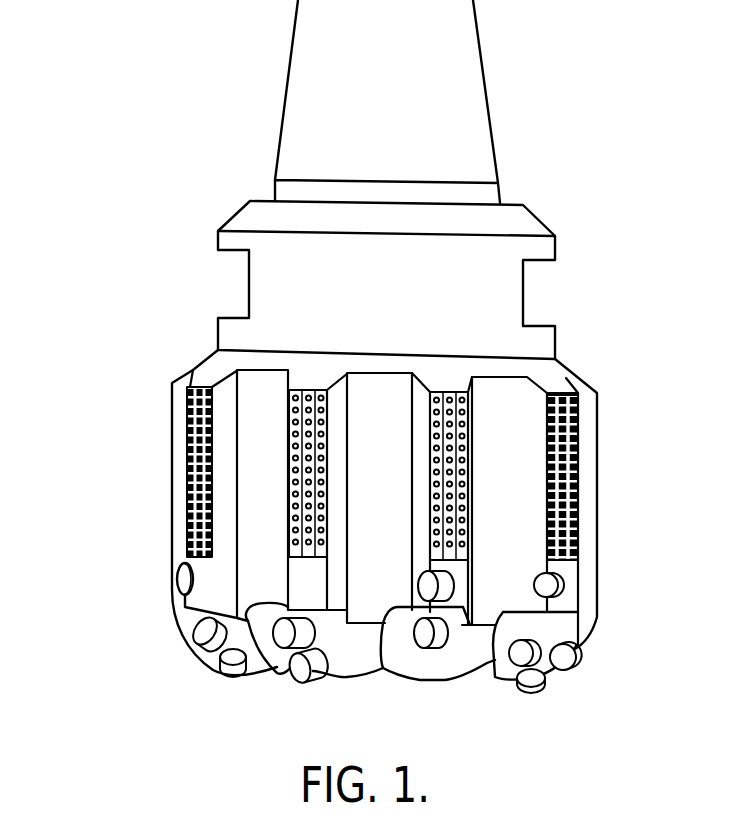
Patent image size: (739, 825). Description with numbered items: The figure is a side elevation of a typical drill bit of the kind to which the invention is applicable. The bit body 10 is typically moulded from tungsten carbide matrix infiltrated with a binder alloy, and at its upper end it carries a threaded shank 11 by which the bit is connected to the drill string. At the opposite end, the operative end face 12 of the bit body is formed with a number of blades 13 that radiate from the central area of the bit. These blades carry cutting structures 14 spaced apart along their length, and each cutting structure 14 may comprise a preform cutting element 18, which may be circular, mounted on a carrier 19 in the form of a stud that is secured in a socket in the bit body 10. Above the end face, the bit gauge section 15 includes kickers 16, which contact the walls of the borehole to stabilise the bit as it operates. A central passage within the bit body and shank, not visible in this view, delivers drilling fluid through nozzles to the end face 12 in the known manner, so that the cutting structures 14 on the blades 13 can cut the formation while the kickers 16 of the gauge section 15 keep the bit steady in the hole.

The bit body 10 is at (506, 574).
The threaded shank 11 is at (463, 159).
The operative end face 12 is at (514, 694).
The blades 13 is at (432, 664).
The cutting structures 14 is at (225, 674).
The bit gauge section 15 is at (150, 495).
The kickers 16 is at (473, 422).
The preform cutting element 18 is at (297, 671).
The carrier 19 is at (321, 675).